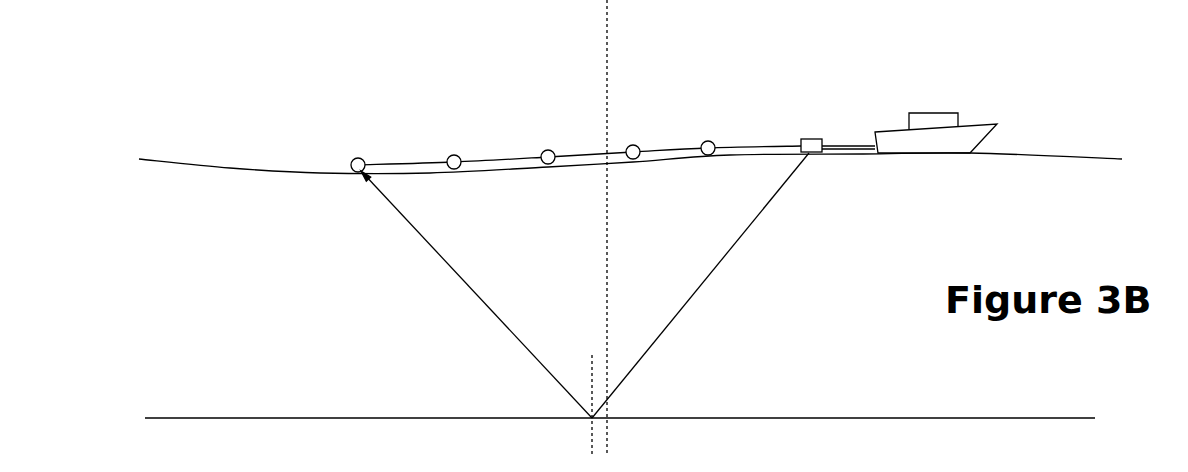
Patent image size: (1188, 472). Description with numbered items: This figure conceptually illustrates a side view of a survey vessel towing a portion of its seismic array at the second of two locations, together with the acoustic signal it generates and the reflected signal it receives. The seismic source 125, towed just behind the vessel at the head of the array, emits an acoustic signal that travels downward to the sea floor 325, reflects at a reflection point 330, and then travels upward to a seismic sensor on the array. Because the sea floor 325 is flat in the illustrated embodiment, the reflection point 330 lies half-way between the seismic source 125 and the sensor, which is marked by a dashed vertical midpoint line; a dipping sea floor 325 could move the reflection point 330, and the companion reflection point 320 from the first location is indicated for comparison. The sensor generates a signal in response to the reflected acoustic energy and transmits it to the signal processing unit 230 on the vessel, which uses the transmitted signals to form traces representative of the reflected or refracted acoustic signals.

The seismic source 125 is at (816, 138).
The signal processing unit 230 is at (916, 112).
The sea floor 325 is at (388, 416).
The reflection point 330 is at (590, 421).
The reflection point 320 is at (609, 421).